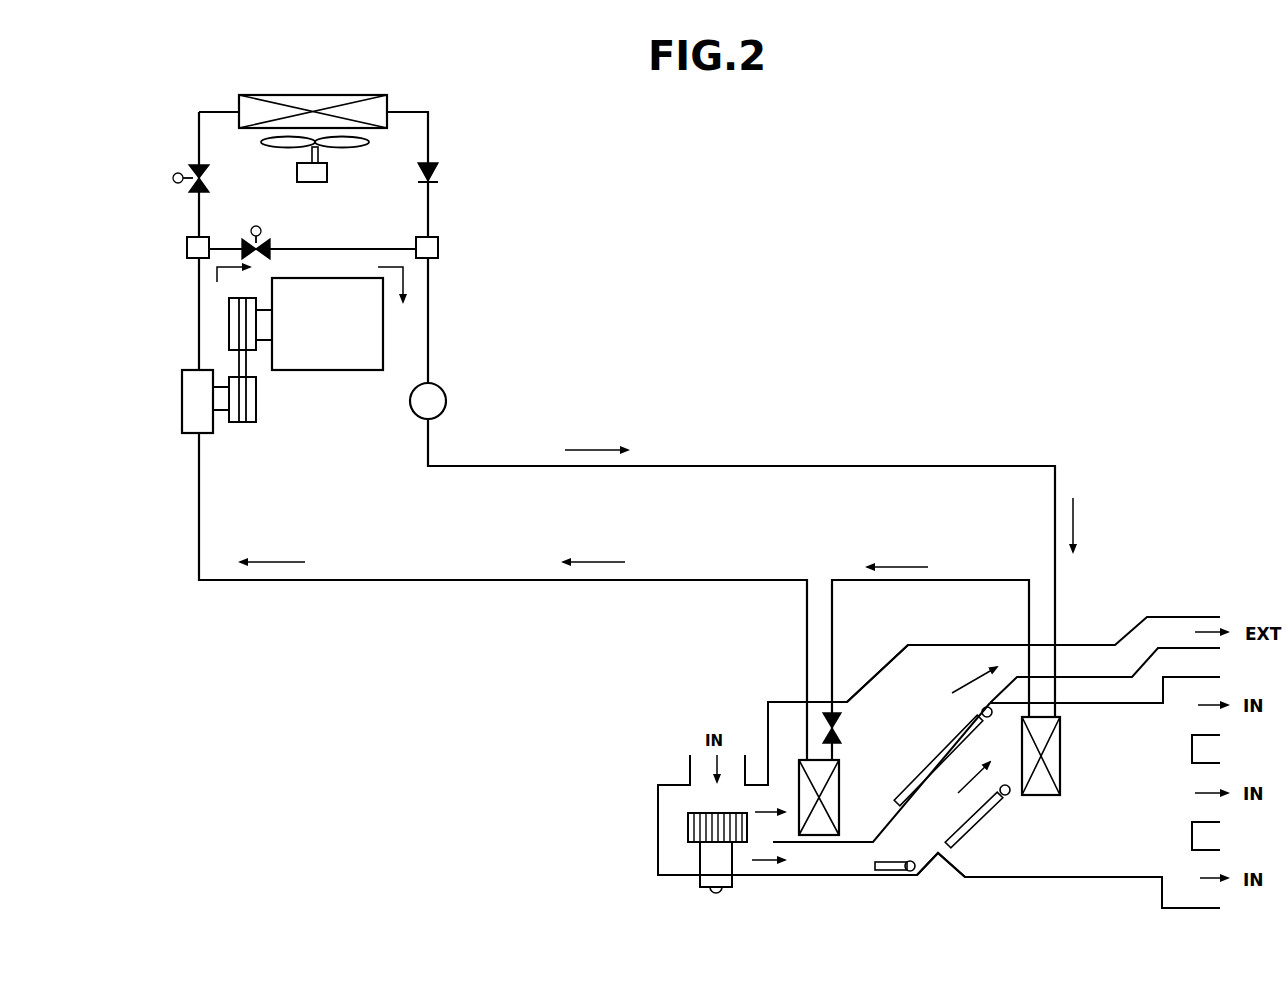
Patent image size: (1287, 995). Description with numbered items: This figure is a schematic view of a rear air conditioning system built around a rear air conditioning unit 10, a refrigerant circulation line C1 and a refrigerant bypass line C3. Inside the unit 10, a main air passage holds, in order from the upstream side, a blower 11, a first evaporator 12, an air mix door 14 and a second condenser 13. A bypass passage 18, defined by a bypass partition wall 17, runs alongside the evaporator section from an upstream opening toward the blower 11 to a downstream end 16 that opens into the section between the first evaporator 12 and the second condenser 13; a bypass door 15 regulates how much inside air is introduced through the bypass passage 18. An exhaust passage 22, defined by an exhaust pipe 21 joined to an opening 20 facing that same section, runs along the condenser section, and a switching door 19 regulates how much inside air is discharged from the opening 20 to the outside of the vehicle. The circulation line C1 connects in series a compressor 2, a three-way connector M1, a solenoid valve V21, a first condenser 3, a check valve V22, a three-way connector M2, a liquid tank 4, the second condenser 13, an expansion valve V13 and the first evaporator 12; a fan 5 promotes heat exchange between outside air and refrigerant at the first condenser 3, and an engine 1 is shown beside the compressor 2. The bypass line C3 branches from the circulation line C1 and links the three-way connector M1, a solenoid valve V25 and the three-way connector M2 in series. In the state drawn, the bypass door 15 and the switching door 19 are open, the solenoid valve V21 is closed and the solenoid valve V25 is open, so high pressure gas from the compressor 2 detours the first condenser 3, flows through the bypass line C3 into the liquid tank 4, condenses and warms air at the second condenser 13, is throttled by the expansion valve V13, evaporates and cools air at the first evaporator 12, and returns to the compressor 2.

The engine 1 is at (320, 372).
The compressor 2 is at (182, 385).
The first condenser 3 is at (372, 95).
The liquid tank 4 is at (446, 392).
The fan 5 is at (280, 148).
The rear air conditioning unit 10 is at (1115, 880).
The blower 11 is at (690, 845).
The first evaporator 12 is at (800, 762).
The second condenser 13 is at (1040, 795).
The air mix door 14 is at (978, 825).
The bypass door 15 is at (890, 873).
The downstream end 16 is at (922, 825).
The bypass partition wall 17 is at (818, 845).
The bypass passage 18 is at (843, 858).
The switching door 19 is at (940, 745).
The opening 20 is at (918, 695).
The exhaust pipe 21 is at (1175, 617).
The exhaust passage 22 is at (1083, 655).
The solenoid valve V21 is at (190, 168).
The check valve V22 is at (440, 173).
The solenoid valve V25 is at (303, 217).
The expansion valve V13 is at (838, 728).
The three-way connector M1 is at (190, 262).
The three-way connector M2 is at (437, 263).
The refrigerant circulation line C1 is at (820, 466).
The refrigerant bypass line C3 is at (372, 249).